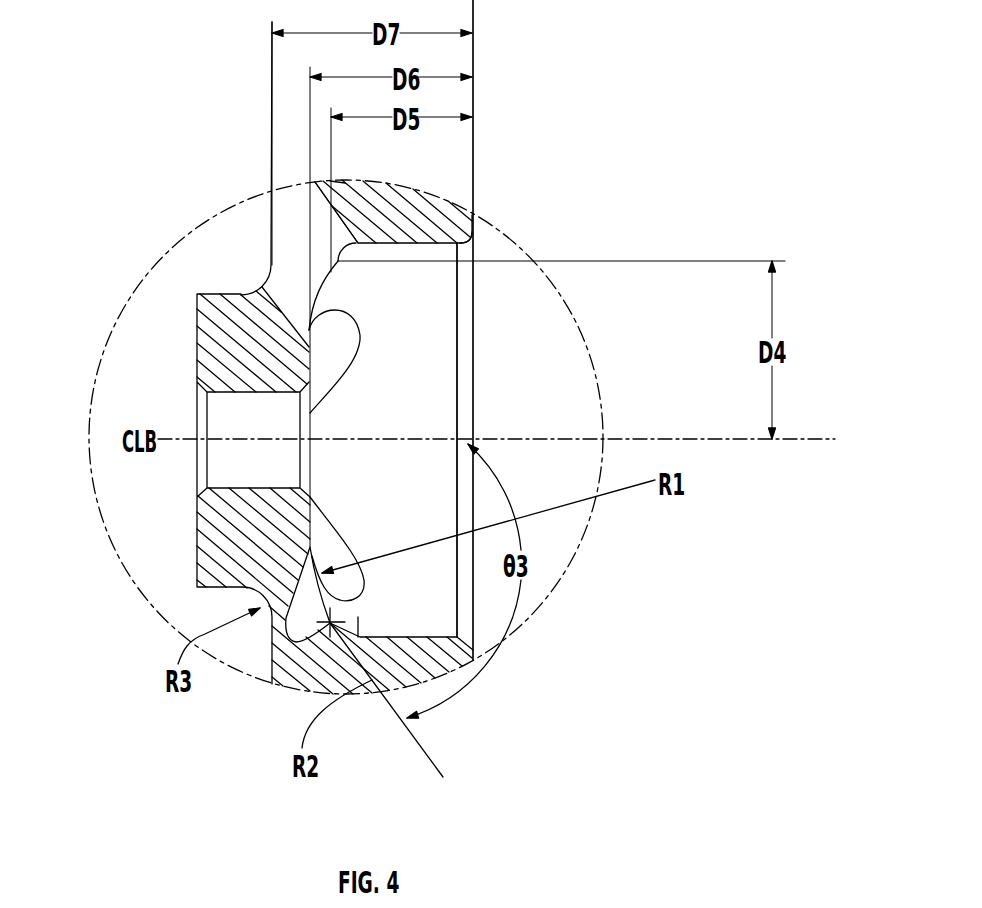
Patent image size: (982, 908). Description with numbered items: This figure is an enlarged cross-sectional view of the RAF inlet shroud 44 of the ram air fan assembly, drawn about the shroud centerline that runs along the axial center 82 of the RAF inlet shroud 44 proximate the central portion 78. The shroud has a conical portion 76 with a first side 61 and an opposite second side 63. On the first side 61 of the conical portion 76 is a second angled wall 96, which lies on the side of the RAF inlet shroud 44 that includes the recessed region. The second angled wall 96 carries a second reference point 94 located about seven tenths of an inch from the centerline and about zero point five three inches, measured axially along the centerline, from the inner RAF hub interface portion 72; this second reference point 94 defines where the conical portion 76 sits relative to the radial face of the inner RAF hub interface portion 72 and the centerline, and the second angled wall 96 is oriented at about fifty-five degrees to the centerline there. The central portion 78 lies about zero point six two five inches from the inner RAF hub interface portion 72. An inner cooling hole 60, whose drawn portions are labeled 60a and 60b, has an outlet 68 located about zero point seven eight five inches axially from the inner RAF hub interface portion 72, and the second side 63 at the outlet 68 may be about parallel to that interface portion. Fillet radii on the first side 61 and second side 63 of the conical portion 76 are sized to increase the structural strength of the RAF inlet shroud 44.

The RAF inlet shroud 44 is at (662, 178).
The inner cooling hole 60 is at (360, 238).
The upper flange portion 60a is at (343, 221).
The lower flange portion 60b is at (297, 567).
The first side 61 is at (320, 291).
The second side 63 is at (271, 192).
The outlet 68 is at (271, 267).
The inner RAF hub interface portion 72 is at (473, 224).
The conical portion 76 is at (350, 191).
The central portion 78 is at (313, 367).
The axial center 82 is at (505, 439).
The second reference point 94 is at (323, 261).
The second angled wall 96 is at (350, 597).